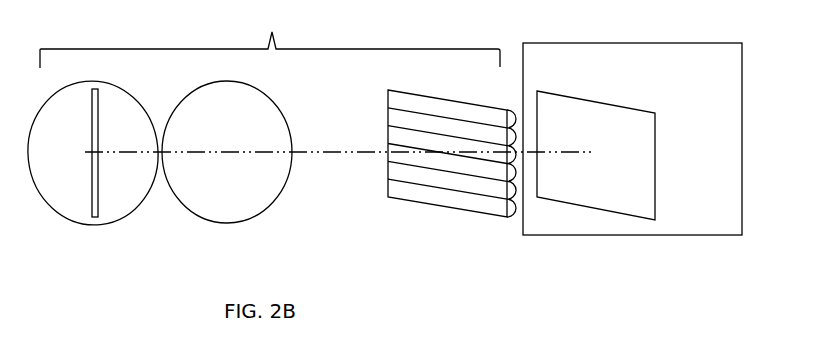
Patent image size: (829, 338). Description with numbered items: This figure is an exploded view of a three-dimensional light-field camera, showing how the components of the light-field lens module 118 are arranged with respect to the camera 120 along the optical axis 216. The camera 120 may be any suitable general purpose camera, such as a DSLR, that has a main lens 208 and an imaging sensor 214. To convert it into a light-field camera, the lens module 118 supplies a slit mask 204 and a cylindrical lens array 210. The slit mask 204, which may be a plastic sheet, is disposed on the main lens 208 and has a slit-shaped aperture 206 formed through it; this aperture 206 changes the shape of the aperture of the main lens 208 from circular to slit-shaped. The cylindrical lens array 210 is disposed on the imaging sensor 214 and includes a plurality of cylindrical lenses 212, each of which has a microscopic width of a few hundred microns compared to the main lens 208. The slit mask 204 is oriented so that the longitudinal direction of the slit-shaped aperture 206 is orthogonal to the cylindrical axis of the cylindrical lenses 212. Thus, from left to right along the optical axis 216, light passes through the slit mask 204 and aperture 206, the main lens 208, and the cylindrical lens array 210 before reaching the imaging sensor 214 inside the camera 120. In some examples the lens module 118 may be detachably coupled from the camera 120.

The 3D LF lens module 118 is at (270, 38).
The camera 120 is at (688, 75).
The slit mask 204 is at (88, 240).
The slit-shaped aperture 206 is at (95, 195).
The main lens 208 is at (237, 221).
The cylindrical lens array 210 is at (453, 224).
The cylindrical lenses 212 is at (512, 220).
The imaging sensor 214 is at (637, 140).
The optical axis 216 is at (323, 155).